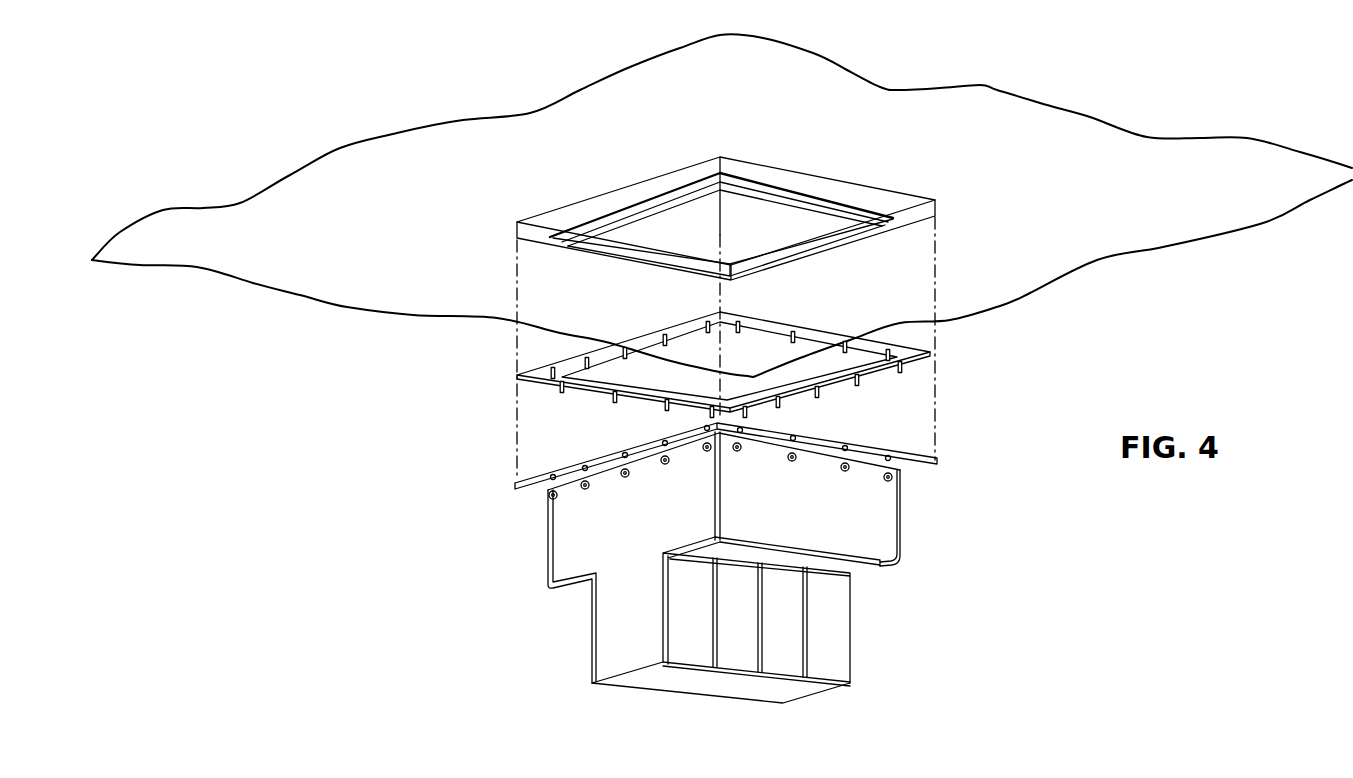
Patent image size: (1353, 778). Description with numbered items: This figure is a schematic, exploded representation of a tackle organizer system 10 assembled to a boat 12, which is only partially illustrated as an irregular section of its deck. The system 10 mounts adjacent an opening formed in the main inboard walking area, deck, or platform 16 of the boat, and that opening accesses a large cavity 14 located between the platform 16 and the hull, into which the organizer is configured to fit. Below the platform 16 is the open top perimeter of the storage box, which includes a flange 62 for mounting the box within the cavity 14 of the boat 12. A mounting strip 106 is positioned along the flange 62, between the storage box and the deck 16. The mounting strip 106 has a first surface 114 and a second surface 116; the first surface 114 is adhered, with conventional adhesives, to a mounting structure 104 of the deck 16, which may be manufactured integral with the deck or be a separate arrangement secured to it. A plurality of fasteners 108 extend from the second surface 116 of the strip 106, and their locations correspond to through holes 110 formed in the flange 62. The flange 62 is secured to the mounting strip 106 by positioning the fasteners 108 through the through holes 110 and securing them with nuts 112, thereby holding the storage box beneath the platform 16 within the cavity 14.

The tackle organizer system 10 is at (476, 437).
The boat 12 is at (1087, 116).
The cavity 14 is at (749, 539).
The platform 16 is at (903, 90).
The flange 62 is at (533, 477).
The mounting structure 104 is at (907, 192).
The mounting strip 106 is at (750, 354).
The fasteners 108 is at (625, 353).
The through holes 110 is at (583, 466).
The nuts 112 is at (585, 489).
The first surface 114 is at (808, 327).
The second surface 116 is at (912, 357).